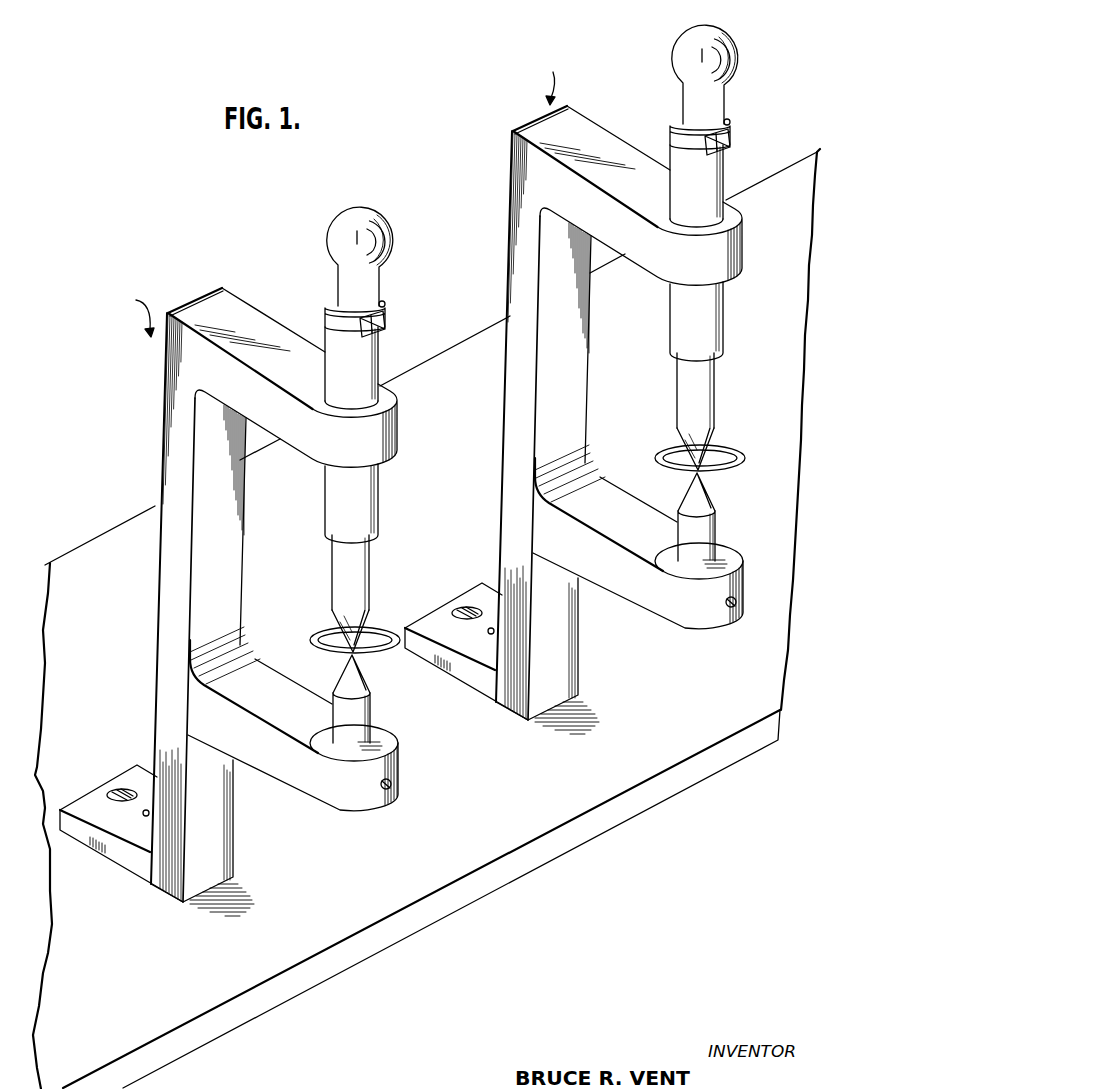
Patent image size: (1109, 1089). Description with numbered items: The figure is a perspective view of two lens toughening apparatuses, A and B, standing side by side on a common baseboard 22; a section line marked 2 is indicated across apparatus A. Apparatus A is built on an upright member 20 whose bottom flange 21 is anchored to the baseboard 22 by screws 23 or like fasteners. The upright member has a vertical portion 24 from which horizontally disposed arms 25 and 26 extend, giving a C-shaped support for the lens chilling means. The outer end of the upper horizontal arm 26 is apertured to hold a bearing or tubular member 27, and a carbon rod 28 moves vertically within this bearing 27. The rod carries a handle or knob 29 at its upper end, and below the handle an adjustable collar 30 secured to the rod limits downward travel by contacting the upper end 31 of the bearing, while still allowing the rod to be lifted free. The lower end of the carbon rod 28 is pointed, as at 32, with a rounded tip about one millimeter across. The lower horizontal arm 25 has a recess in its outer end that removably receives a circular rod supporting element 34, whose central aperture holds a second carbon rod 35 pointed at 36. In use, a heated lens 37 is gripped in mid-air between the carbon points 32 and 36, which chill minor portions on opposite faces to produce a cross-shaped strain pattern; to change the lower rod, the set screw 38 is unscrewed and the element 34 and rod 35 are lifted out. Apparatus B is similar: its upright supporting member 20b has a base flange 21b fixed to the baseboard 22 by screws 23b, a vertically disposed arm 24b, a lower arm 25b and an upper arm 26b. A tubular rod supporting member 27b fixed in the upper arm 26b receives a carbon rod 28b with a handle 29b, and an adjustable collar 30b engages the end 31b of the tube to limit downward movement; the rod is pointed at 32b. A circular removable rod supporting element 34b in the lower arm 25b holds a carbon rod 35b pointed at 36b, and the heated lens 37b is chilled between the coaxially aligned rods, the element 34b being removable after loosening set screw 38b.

The section line 2- 2 is at (380, 174).
The upright member 20 is at (147, 578).
The upright supporting member 20b is at (593, 372).
The bottom flange 21 is at (121, 825).
The base flange 21b is at (461, 637).
The baseboard 22 is at (318, 915).
The screws 23 is at (124, 789).
The screws 23b is at (471, 602).
The vertical portion 24 is at (157, 456).
The vertically disposed arm 24b is at (519, 425).
The lower horizontally disposed arm 25 is at (320, 720).
The lower arm 25b is at (659, 542).
The horizontal arm 26 is at (262, 317).
The upper arm 26b is at (627, 184).
The bearing or tubular member 27 is at (380, 484).
The tubular rod supporting member 27b is at (725, 253).
The carbon rod 28 is at (371, 563).
The carbon rod 28b is at (723, 390).
The handle or knob 29 is at (392, 233).
The handle 29b is at (729, 74).
The adjustable collar 30 is at (384, 311).
The adjustable collar 30b is at (743, 127).
The upper end of the bearing member 31 is at (327, 314).
The end of tube 31b is at (685, 130).
The point 32 is at (343, 633).
The pointed end 32b is at (724, 441).
The circular rod supporting element 34 is at (373, 733).
The circular removable rod supporting element 34b is at (713, 546).
The carbon rod 35 is at (370, 708).
The carbon rod 35b is at (725, 525).
The pointed portion 36 is at (345, 661).
The pointed end 36b is at (677, 490).
The heated lens 37 is at (374, 630).
The lens 37b is at (723, 458).
The set screw 38 is at (391, 784).
The set screw 38b is at (756, 581).